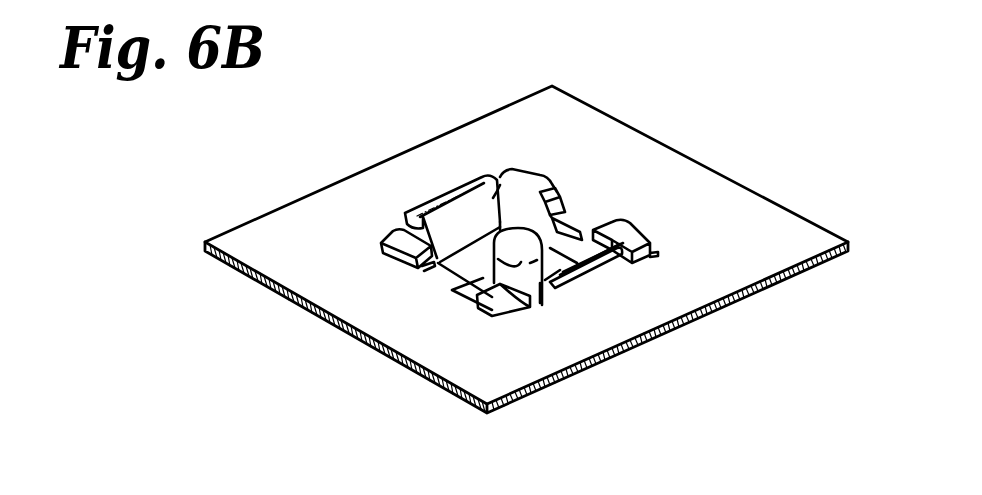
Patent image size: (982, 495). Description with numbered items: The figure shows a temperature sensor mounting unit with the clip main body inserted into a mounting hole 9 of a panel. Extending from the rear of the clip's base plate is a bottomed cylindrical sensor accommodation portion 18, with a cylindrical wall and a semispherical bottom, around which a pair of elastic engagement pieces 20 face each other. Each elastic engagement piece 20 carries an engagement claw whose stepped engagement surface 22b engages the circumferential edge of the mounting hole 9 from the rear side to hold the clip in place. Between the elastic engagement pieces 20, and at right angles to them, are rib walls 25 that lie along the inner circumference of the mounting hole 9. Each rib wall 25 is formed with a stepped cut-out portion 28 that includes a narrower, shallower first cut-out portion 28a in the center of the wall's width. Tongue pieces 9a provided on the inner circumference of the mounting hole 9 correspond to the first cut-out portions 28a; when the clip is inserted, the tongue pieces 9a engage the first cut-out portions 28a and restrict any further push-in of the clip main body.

The mounting hole 9 is at (536, 307).
The tongue piece 9a is at (575, 215).
The sensor accommodation portion 18 is at (506, 270).
The elastic engagement piece 20 is at (445, 208).
The stepped engagement surface 22b is at (562, 315).
The rib wall 25 is at (637, 230).
The cut-out portion 28 is at (438, 263).
The first cut-out portion 28a is at (566, 201).